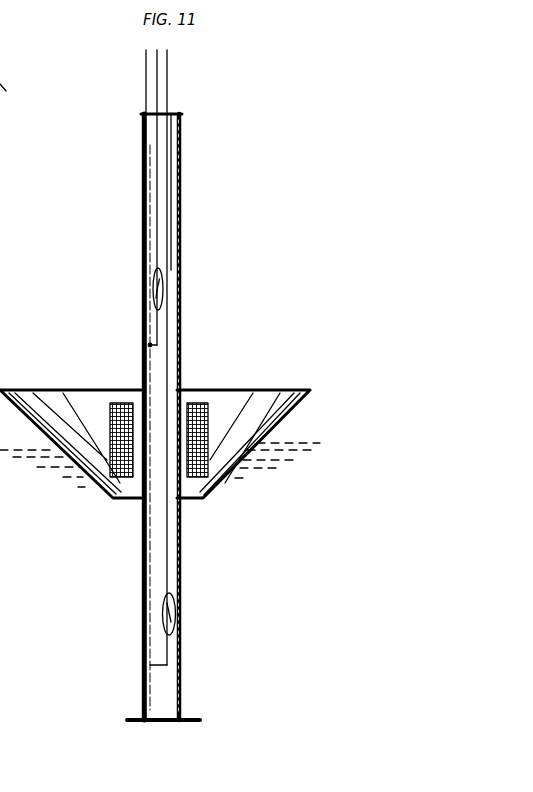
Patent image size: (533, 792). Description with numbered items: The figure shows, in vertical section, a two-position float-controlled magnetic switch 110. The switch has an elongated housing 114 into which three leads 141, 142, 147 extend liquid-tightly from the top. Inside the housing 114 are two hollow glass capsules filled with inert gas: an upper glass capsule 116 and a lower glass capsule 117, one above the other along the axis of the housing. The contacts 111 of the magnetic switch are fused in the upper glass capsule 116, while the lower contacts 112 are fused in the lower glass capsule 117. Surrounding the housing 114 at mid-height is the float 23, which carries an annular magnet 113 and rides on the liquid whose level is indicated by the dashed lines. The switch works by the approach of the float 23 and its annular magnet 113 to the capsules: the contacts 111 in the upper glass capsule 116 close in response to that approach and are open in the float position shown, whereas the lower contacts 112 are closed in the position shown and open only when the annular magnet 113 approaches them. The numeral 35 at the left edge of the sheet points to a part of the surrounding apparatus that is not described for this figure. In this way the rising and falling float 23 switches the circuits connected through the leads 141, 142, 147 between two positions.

The float-controlled magnetic switch 110 is at (186, 385).
The housing 114 is at (142, 191).
The lead 141 is at (146, 63).
The lead 142 is at (157, 97).
The lead 147 is at (168, 89).
The upper glass capsule 116 is at (154, 273).
The contacts 111 is at (154, 300).
The lower glass capsule 117 is at (175, 599).
The lower contacts 112 is at (177, 628).
The float 23 is at (233, 390).
The annular magnet 113 is at (123, 405).
The tank wall 35 is at (30, 108).